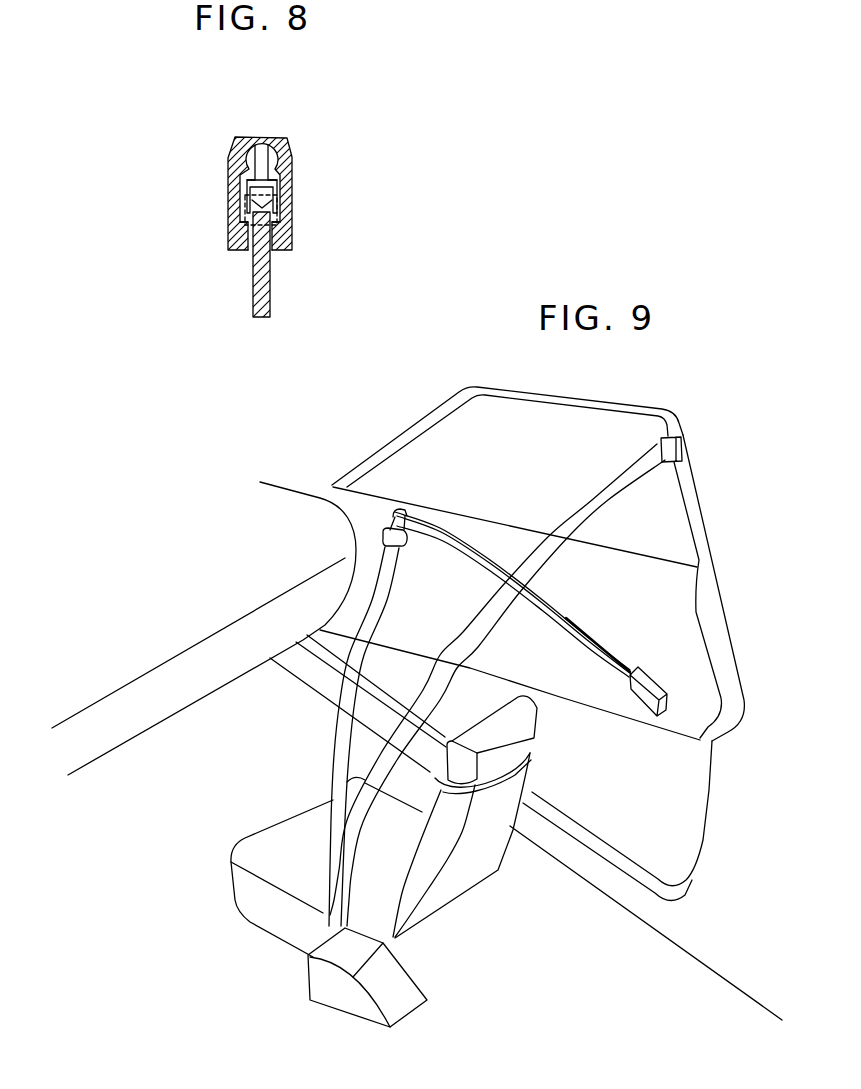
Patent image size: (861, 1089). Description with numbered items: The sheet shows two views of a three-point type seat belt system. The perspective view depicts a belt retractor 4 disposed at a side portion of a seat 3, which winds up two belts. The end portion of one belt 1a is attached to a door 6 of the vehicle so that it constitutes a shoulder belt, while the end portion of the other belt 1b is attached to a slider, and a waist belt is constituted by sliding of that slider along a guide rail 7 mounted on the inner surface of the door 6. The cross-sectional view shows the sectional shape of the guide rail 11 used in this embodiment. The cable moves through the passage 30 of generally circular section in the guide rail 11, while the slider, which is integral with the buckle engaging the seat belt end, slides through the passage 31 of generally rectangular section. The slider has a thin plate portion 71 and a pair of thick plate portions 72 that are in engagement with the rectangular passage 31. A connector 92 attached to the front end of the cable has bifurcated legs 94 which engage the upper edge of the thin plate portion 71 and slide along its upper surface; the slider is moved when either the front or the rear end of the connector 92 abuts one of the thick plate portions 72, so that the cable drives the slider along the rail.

In FIG. 8, the passage 30 is at (277, 137).
In FIG. 8, the guide rail 11 is at (283, 170).
In FIG. 8, the connector 92 is at (232, 174).
In FIG. 8, the bifurcated legs 94 is at (242, 210).
In FIG. 8, the passage 31 is at (283, 230).
In FIG. 8, the thick plate portion 72 is at (240, 233).
In FIG. 8, the thin plate portion 71 is at (268, 298).
In FIG. 9, the belt 1a is at (617, 490).
In FIG. 9, the belt 1b is at (373, 610).
In FIG. 9, the guide rail 7 is at (583, 635).
In FIG. 9, the door 6 is at (682, 637).
In FIG. 9, the seat 3 is at (288, 843).
In FIG. 9, the belt retractor 4 is at (400, 980).